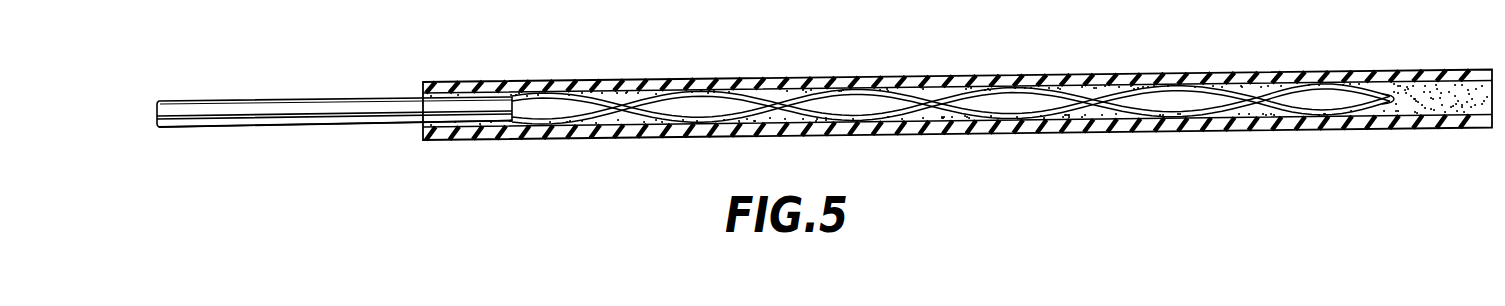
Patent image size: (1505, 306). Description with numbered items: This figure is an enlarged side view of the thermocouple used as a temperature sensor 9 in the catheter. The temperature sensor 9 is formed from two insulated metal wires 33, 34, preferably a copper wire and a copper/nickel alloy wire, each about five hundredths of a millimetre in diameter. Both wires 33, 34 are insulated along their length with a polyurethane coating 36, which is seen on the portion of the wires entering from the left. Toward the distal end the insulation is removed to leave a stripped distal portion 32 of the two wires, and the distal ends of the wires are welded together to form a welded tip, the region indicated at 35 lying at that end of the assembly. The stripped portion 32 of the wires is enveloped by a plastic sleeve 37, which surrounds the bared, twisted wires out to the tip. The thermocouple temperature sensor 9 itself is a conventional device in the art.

The temperature sensor 9 is at (1023, 75).
The stripped distal portion 32 is at (845, 92).
The plastic sleeve 37 is at (1182, 73).
The insulated metal wire 33 is at (255, 102).
The insulated metal wire 34 is at (309, 119).
The distal tip joint 35 is at (1383, 103).
The polyurethane coating 36 is at (350, 97).